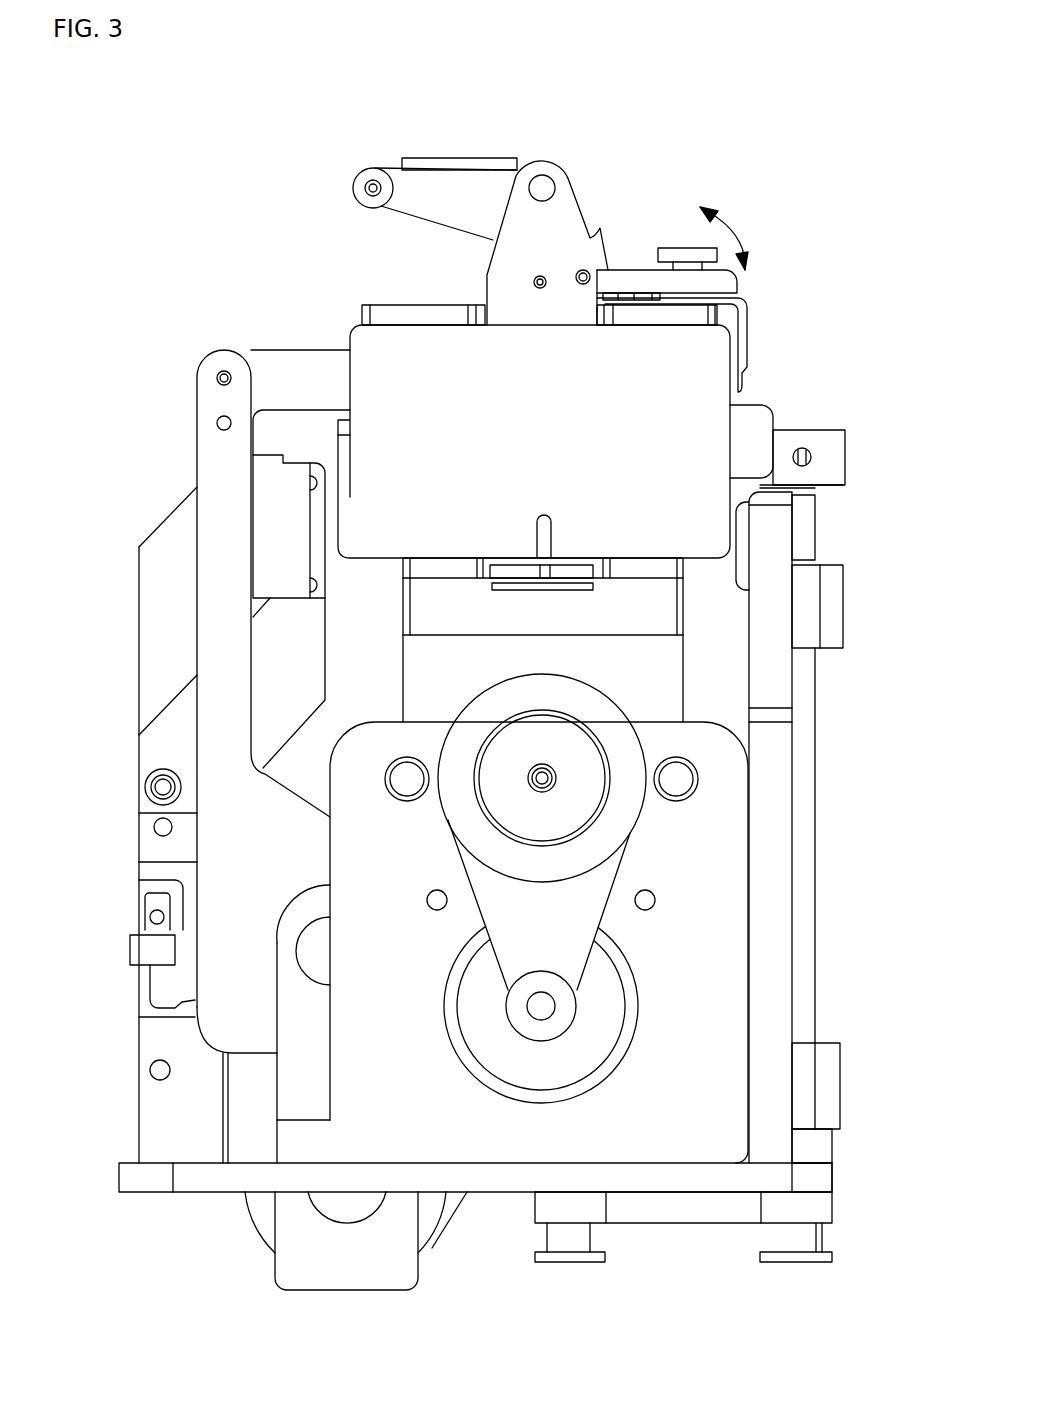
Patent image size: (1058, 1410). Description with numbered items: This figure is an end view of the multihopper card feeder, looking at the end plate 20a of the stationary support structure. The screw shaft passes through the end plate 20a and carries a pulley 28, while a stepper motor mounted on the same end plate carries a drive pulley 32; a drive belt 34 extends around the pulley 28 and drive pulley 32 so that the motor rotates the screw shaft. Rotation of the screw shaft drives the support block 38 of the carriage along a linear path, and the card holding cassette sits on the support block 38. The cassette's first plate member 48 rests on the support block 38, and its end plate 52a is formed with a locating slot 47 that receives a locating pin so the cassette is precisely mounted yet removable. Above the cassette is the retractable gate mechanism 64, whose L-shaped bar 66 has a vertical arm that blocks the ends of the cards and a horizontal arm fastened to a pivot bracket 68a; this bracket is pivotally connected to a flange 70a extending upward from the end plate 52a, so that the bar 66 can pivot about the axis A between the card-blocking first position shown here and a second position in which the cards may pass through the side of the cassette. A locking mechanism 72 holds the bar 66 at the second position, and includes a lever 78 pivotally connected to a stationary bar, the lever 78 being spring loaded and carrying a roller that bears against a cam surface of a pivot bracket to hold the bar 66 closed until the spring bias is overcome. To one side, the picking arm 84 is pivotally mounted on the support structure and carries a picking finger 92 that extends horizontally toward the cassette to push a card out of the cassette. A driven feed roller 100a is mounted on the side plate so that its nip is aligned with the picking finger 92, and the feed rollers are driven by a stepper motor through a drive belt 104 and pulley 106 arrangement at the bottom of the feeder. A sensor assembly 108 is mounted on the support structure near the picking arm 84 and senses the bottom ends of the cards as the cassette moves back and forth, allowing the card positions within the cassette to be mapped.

The end plate 20a is at (730, 967).
The pulley 28 is at (463, 817).
The drive pulley 32 is at (560, 1022).
The drive belt 34 is at (622, 862).
The support block 38 is at (642, 618).
The locating slot 47 is at (548, 524).
The first plate member 48 is at (663, 568).
The end plate 52a is at (708, 408).
The retractable gate mechanism 64 is at (777, 257).
The L-shaped bar 66 is at (755, 320).
The pivot bracket 68a is at (627, 280).
The flange 70a is at (563, 203).
The locking mechanism 72 is at (467, 138).
The lever 78 is at (428, 210).
The picking arm 84 is at (212, 620).
The picking finger 92 is at (292, 348).
The driven feed roller 100a is at (838, 472).
The drive belt 104 is at (686, 1245).
The pulley 106 is at (822, 1262).
The sensor assembly 108 is at (265, 495).
The pivot axis A is at (580, 285).